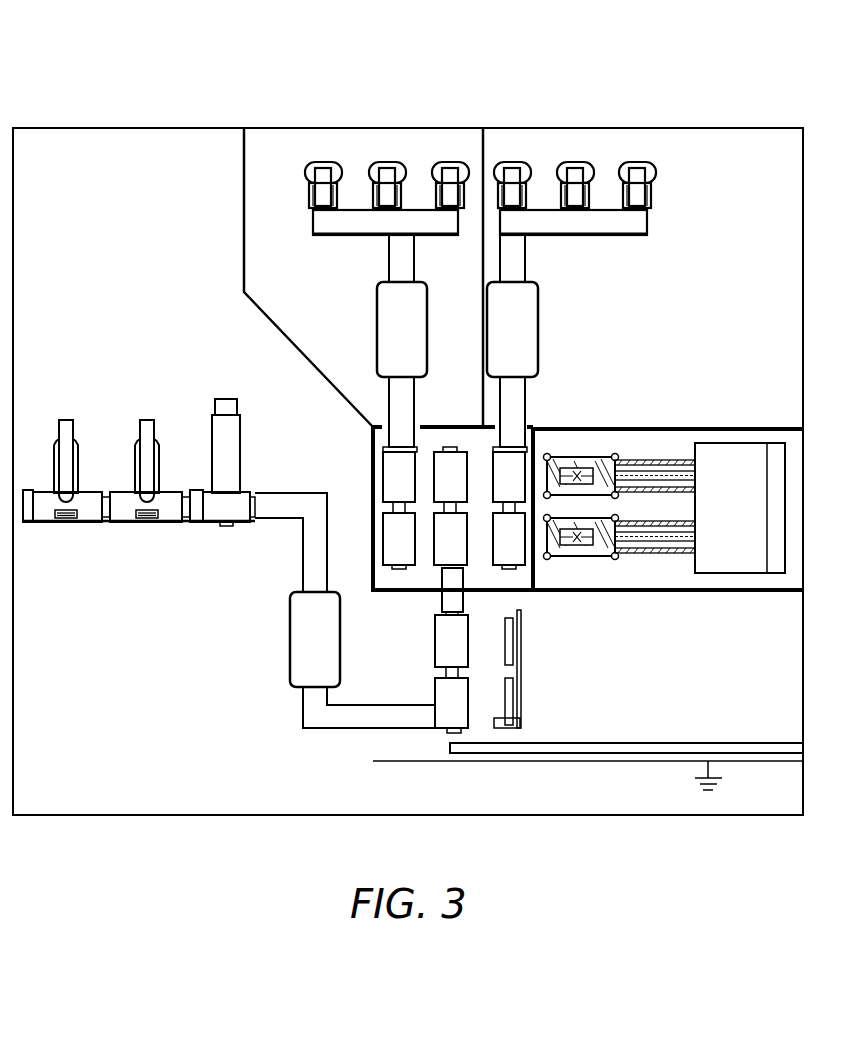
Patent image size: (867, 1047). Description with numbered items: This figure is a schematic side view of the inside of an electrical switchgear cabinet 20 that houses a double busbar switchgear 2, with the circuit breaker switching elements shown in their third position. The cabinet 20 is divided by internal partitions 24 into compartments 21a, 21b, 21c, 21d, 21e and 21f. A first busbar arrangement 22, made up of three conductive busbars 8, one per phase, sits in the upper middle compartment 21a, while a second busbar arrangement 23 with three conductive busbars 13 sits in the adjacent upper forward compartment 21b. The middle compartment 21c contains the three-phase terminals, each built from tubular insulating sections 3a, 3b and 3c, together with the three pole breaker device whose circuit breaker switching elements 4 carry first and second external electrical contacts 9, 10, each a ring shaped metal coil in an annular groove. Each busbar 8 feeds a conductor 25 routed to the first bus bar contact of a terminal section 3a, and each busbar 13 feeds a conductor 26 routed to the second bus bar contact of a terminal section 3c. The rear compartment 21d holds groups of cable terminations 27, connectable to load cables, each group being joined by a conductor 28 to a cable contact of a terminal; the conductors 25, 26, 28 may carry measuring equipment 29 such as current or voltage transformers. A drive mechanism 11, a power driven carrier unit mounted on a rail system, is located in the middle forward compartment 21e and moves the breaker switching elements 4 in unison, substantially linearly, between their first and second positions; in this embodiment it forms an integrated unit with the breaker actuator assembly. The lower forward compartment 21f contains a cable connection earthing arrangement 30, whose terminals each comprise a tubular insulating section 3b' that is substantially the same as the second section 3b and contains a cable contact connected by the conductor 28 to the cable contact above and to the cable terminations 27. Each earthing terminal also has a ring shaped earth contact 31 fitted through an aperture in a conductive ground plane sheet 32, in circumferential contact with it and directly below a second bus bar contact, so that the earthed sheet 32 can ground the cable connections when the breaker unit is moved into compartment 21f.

The switchgear 2 is at (102, 207).
The electrical switchgear cabinet 20 is at (106, 68).
The upper middle compartment 21a is at (273, 156).
The upper forward compartment 21b is at (778, 157).
The middle compartment 21c is at (531, 430).
The rear compartment 21d is at (49, 359).
The middle forward compartment 21e is at (740, 584).
The lower forward compartment 21f is at (776, 710).
The first busbar arrangement 22 is at (298, 135).
The second busbar arrangement 23 is at (656, 140).
The internal partitions 24 is at (243, 218).
The conductors 25 is at (388, 258).
The conductors 26 is at (526, 258).
The cable terminations 27 is at (143, 420).
The conductors 28 is at (441, 603).
The measuring equipment 29 is at (376, 322).
The cable connection earthing arrangement 30 is at (478, 745).
The earth contact 31 is at (516, 641).
The conductive ground plane sheet 32 is at (516, 724).
The tubular section 3a is at (399, 510).
The second section 3b is at (450, 506).
The tubular section 3c is at (509, 510).
The tubular insulating section 3b' is at (421, 674).
The circuit breaker switching element 4 is at (665, 459).
The conductive busbars 8 is at (324, 161).
The first external electrical contact 9 is at (548, 455).
The second external electrical contact 10 is at (616, 455).
The drive mechanism 11 is at (777, 478).
The conductive busbars 13 is at (513, 161).